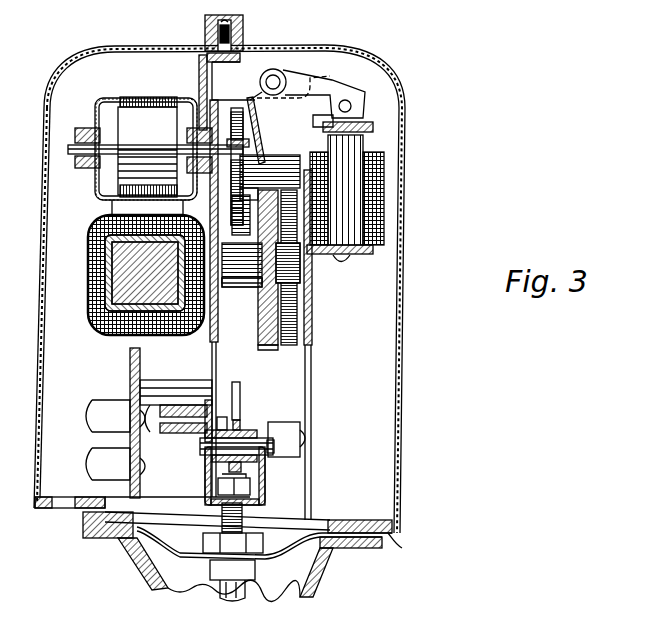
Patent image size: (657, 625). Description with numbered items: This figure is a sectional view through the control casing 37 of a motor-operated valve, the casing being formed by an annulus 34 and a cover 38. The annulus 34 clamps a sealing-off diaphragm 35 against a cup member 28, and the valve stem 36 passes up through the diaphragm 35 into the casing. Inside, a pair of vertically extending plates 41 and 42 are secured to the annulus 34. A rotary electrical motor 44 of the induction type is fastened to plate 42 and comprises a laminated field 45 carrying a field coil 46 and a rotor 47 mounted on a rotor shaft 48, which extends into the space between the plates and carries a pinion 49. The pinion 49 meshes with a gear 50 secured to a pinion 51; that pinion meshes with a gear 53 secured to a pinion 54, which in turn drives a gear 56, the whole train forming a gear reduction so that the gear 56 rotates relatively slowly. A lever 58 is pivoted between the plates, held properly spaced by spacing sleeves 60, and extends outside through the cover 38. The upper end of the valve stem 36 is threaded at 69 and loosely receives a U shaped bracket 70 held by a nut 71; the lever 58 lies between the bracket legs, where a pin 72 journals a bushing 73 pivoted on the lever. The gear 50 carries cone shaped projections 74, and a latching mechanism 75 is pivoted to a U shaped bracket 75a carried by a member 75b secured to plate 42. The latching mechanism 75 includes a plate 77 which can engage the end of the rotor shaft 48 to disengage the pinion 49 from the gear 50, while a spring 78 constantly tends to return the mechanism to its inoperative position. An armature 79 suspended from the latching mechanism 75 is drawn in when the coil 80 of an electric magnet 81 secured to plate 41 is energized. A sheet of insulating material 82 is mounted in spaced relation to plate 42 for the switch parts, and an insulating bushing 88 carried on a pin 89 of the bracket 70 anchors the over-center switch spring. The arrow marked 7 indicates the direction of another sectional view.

The section line arrow 7 is at (53, 132).
The cup member 28 is at (325, 570).
The annulus 34 is at (402, 548).
The sealing-off diaphragm 35 is at (290, 560).
The valve stem 36 is at (240, 600).
The control casing 37 is at (395, 456).
The cover 38 is at (401, 393).
The plate 41 is at (313, 340).
The plate 42 is at (208, 332).
The rotary electrical motor 44 is at (102, 211).
The laminated field 45 is at (133, 97).
The field coil 46 is at (96, 306).
The rotor 47 is at (117, 121).
The rotor shaft 48 is at (78, 168).
The pinion 49 is at (237, 135).
The gear 50 is at (231, 210).
The pinion 51 is at (248, 168).
The gear 53 is at (289, 347).
The pinion 54 is at (240, 288).
The gear 56 is at (266, 350).
The lever 58 is at (240, 395).
The spacing sleeves 60 is at (281, 422).
The threaded upper end 69 is at (243, 522).
The U shaped bracket 70 is at (205, 495).
The nut 71 is at (252, 487).
The pin 72 is at (210, 447).
The bushing 73 is at (243, 462).
The cone shaped projections 74 is at (246, 230).
The latching mechanism 75 is at (323, 90).
The U shaped bracket 75a is at (240, 67).
The member 75b is at (205, 55).
The plate 77 is at (252, 118).
The spring 78 is at (259, 85).
The armature 79 is at (375, 128).
The coil 80 is at (385, 218).
The electric magnet 81 is at (393, 197).
The sheet of insulating material 82 is at (130, 363).
The insulating bushing 88 is at (170, 433).
The pin 89 is at (182, 400).